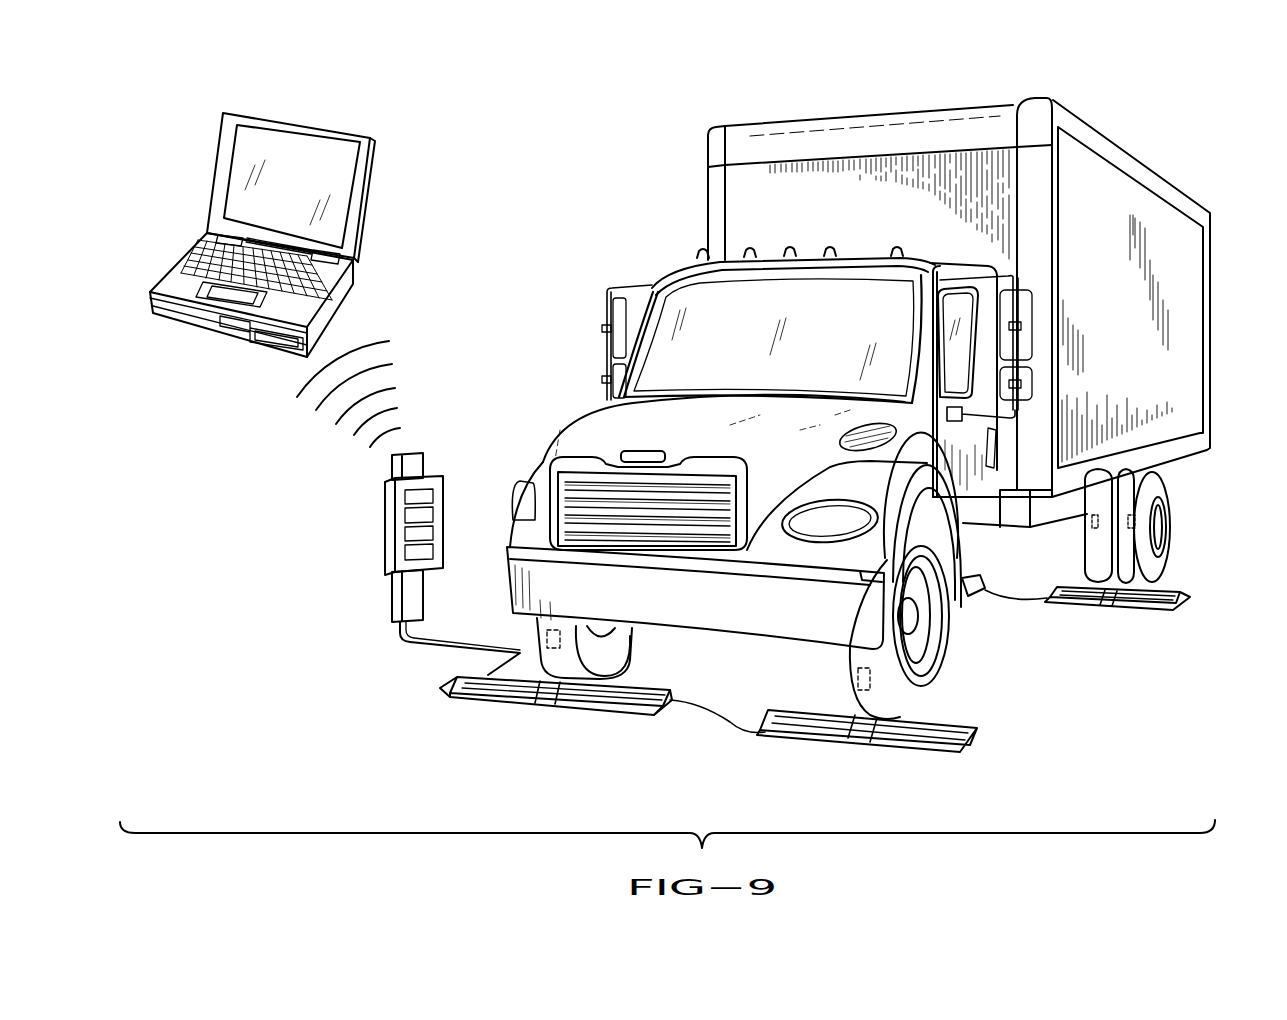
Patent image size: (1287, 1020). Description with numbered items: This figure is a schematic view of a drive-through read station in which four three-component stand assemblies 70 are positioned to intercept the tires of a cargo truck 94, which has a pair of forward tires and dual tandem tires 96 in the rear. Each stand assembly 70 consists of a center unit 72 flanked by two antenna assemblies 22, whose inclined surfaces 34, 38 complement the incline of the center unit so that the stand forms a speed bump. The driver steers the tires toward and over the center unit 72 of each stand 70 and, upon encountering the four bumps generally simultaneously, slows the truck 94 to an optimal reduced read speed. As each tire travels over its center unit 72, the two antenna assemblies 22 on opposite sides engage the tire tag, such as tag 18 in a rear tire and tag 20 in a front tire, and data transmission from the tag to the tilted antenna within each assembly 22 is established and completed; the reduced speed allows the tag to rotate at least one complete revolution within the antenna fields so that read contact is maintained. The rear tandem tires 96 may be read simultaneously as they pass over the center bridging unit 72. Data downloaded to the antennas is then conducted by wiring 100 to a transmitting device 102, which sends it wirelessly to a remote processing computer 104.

The tag 18 is at (1132, 512).
The tag 20 is at (855, 677).
The antenna assembly 22 is at (978, 570).
The inclined surface 34 is at (650, 690).
The inclined surface 38 is at (630, 702).
The three-component stand assembly 70 is at (500, 703).
The center unit 72 is at (858, 738).
The truck 94 is at (883, 408).
The rear dual tires 96 is at (1098, 562).
The wiring 100 is at (437, 650).
The transmitting device 102 is at (386, 512).
The processing computer 104 is at (347, 133).